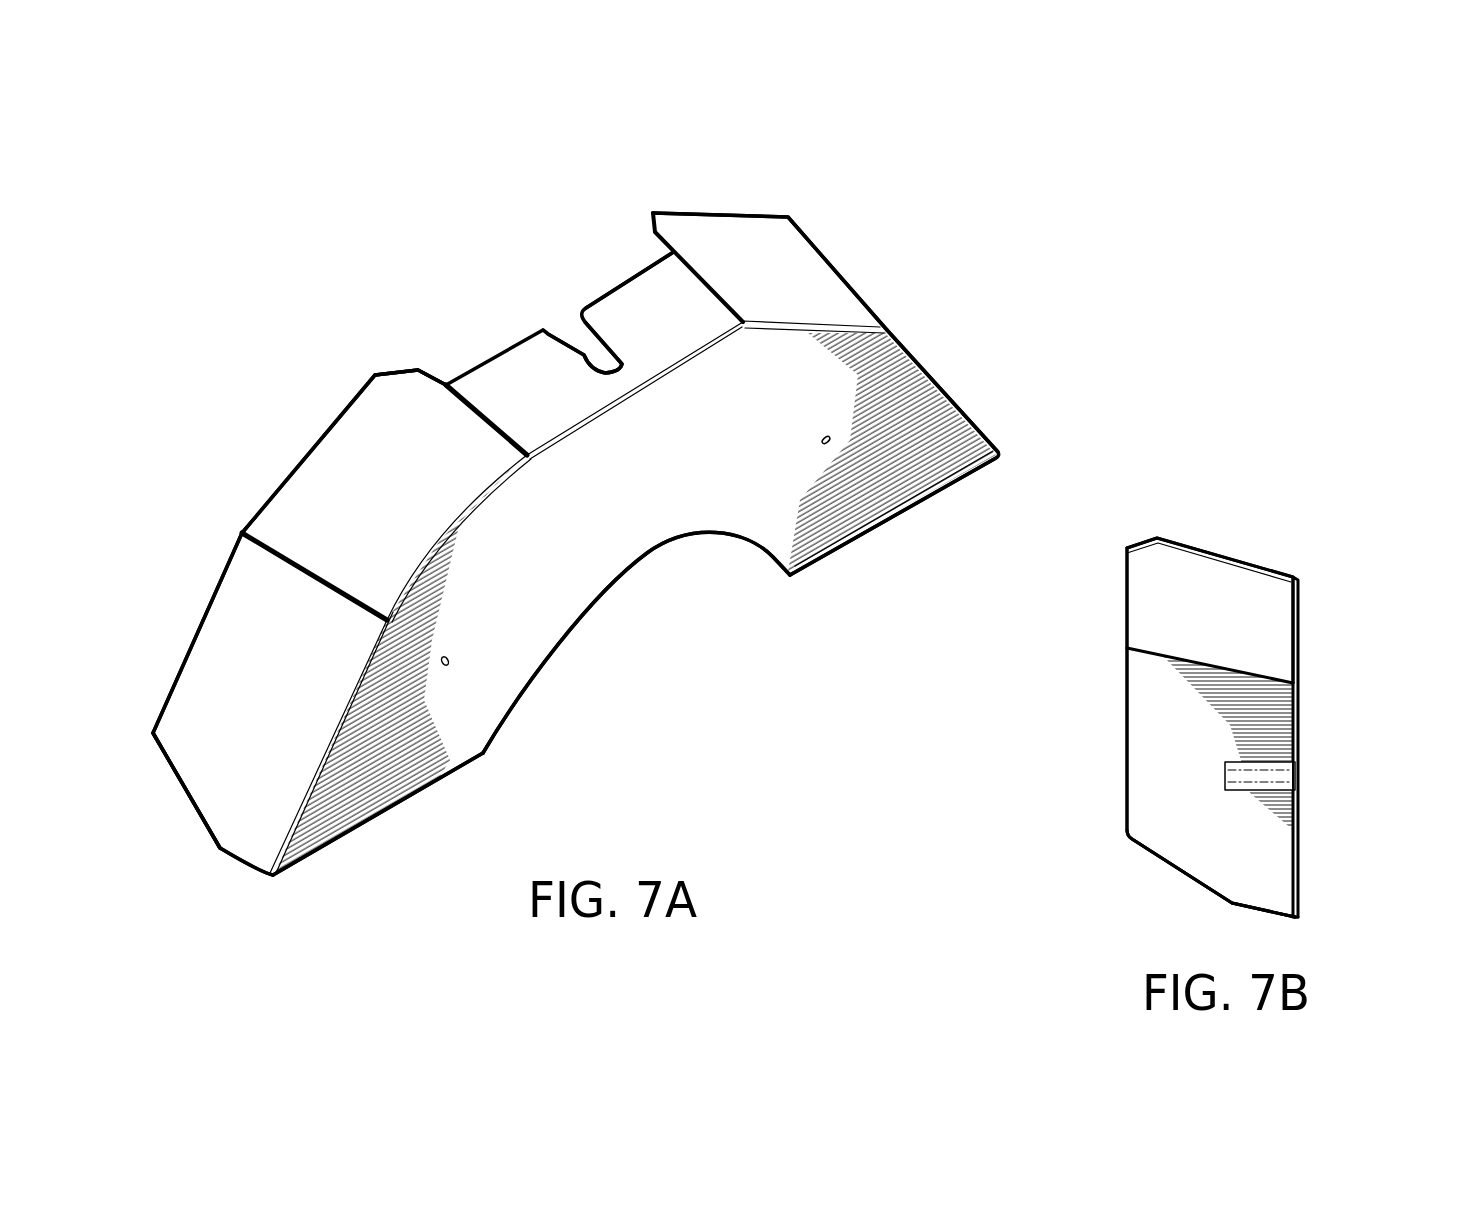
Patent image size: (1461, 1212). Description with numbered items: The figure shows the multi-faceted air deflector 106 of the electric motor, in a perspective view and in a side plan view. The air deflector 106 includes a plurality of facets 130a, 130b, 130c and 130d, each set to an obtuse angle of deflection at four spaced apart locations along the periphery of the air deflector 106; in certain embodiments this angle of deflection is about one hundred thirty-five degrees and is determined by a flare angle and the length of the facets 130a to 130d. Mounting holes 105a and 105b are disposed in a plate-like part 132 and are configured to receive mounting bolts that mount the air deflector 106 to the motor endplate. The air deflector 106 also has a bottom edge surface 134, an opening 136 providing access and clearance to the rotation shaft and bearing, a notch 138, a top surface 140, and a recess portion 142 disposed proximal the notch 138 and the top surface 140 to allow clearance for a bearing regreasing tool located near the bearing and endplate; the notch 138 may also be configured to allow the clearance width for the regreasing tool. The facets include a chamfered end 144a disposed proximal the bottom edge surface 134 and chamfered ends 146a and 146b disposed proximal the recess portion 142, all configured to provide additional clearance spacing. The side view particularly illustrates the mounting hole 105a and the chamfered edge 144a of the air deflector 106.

In FIG. 7A, the multi-faceted air deflector 106 is at (276, 214).
In FIG. 7B, the multi-faceted air deflector 106 is at (1164, 508).
In FIG. 7A, the facet 130a is at (248, 637).
In FIG. 7B, the facet 130a is at (1143, 692).
In FIG. 7A, the facet 130b is at (347, 452).
In FIG. 7B, the facet 130b is at (1265, 623).
In FIG. 7A, the facet 130c is at (797, 267).
In FIG. 7A, the facet 130d is at (943, 387).
In FIG. 7A, the plate-like part 132 is at (380, 783).
In FIG. 7B, the plate-like part 132 is at (1297, 847).
In FIG. 7A, the bottom edge surface 134 is at (877, 527).
In FIG. 7B, the bottom edge surface 134 is at (1297, 917).
In FIG. 7A, the opening 136 is at (558, 627).
In FIG. 7A, the notch 138 is at (592, 356).
In FIG. 7A, the top surface 140 is at (653, 330).
In FIG. 7A, the recess portion 142 is at (444, 350).
In FIG. 7A, the chamfered end 144a is at (190, 802).
In FIG. 7B, the chamfered end 144a is at (1167, 863).
In FIG. 7A, the chamfered end 146a is at (393, 370).
In FIG. 7A, the chamfered end 146b is at (653, 227).
In FIG. 7A, the mounting hole 105a is at (445, 657).
In FIG. 7B, the mounting hole 105a is at (1252, 760).
In FIG. 7A, the mounting hole 105b is at (821, 442).